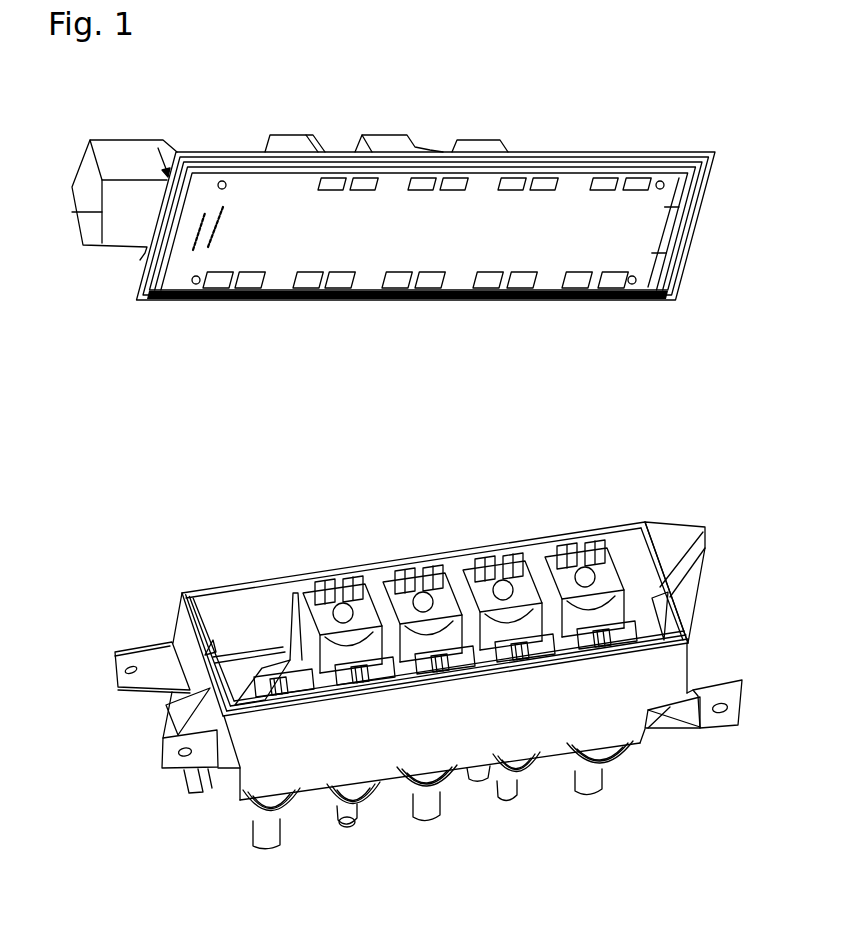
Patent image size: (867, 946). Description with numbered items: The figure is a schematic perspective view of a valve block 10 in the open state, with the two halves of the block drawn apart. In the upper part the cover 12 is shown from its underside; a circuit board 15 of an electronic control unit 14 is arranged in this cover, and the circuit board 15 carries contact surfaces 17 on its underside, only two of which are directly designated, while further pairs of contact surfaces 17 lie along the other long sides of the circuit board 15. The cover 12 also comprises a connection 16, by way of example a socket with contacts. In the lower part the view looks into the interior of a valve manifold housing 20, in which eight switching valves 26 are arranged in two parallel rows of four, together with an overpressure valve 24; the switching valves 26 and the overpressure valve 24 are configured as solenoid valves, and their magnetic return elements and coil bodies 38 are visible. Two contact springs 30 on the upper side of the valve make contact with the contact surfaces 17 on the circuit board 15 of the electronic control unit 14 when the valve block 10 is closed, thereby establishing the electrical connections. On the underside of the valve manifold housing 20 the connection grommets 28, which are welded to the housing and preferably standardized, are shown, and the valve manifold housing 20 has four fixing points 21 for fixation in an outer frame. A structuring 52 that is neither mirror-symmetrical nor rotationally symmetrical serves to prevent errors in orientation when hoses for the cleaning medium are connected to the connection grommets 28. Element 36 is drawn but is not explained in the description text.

The valve block 10 is at (602, 452).
The cover 12 is at (615, 157).
The electronic control unit 14 is at (648, 212).
The circuit board 15 is at (658, 253).
The connection 16 is at (76, 180).
The contact surfaces 17 is at (243, 282).
The valve manifold housing 20 is at (175, 620).
The fixing points 21 is at (115, 667).
The overpressure valve 24 is at (252, 702).
The switching valves 26 is at (318, 608).
The connection grommets 28 is at (267, 835).
The contact springs 30 is at (318, 583).
The sloped wall 36 is at (258, 677).
The magnetic return elements and coil bodies 38 is at (362, 618).
The structuring 52 is at (478, 781).